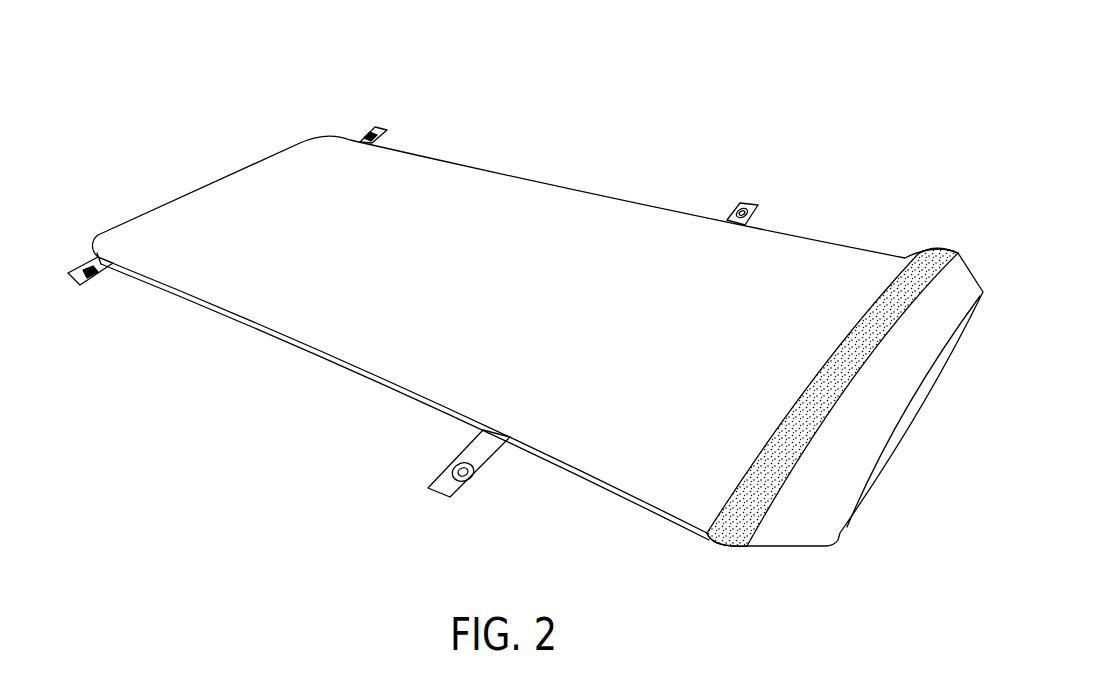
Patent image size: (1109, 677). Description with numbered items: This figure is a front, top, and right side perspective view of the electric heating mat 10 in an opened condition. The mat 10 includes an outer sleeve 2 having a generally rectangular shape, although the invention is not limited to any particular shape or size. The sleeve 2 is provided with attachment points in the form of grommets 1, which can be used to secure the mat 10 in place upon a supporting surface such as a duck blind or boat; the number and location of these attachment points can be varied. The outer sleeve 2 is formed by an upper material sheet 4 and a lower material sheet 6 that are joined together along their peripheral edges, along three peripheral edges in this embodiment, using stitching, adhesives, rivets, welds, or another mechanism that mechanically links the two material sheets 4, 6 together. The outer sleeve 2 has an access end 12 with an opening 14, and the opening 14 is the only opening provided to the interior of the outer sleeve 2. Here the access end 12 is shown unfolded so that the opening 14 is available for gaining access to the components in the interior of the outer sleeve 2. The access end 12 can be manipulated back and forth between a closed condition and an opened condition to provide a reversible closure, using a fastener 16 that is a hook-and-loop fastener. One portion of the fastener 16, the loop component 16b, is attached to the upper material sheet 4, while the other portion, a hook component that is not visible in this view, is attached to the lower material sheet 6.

The mat 10 is at (525, 349).
The outer sleeve 2 is at (578, 208).
The upper material sheet 4 is at (225, 295).
The lower material sheet 6 is at (362, 369).
The grommets 1 is at (450, 500).
The access end 12 is at (840, 419).
The opening 14 is at (918, 412).
The fastener 16 is at (940, 250).
The loop component 16b is at (727, 528).